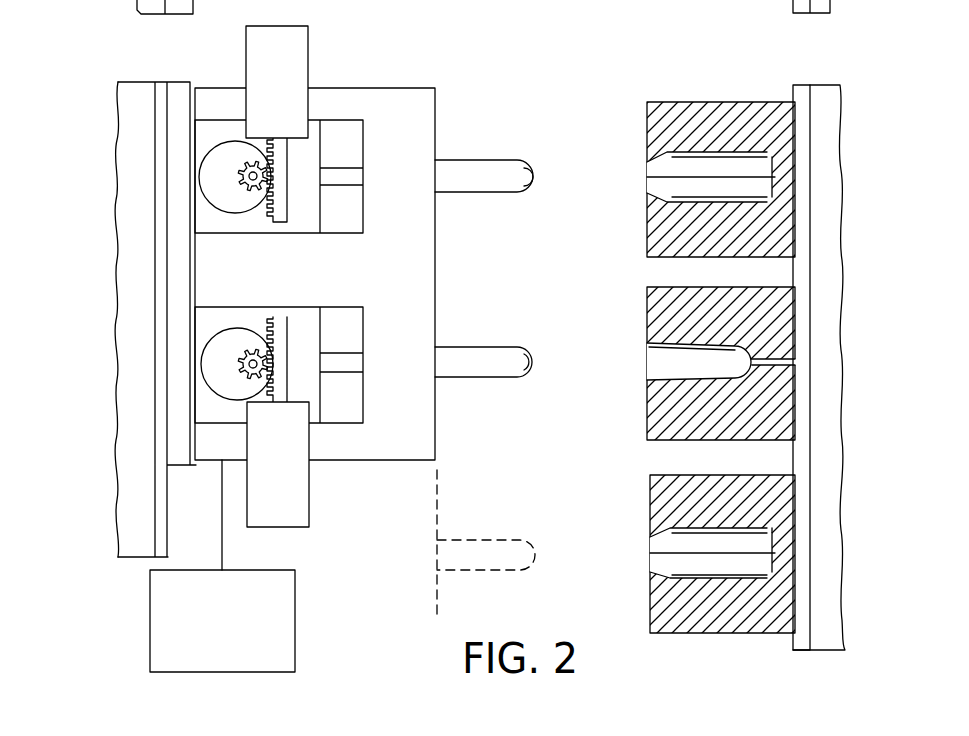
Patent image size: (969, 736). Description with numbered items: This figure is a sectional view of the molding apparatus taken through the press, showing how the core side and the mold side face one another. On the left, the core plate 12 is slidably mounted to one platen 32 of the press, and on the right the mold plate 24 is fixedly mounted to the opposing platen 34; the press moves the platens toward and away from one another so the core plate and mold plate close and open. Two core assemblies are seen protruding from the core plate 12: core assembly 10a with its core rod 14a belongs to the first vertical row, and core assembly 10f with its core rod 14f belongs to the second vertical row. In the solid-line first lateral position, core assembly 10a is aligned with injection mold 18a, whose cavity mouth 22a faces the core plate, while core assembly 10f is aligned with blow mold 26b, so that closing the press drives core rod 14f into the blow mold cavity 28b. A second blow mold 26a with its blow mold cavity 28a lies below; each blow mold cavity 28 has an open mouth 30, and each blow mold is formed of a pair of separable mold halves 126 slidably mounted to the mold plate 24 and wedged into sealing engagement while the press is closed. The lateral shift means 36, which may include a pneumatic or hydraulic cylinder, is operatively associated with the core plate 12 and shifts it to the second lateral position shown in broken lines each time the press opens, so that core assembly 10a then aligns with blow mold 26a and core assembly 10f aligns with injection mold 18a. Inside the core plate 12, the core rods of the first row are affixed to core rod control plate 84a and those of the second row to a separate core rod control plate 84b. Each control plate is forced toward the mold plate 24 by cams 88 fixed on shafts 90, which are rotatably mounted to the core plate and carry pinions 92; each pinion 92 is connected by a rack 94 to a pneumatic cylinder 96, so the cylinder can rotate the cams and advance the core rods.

The core assembly 10a is at (509, 432).
The core assembly 10f is at (507, 156).
The core plate 12 is at (393, 85).
The core rod 14a is at (520, 348).
The core rod 14f is at (520, 160).
The injection mold 18a is at (645, 305).
The cavity mouth 22a is at (657, 370).
The mold plate 24 is at (802, 93).
The blow mold 26a is at (645, 492).
The blow mold 26b is at (645, 118).
The blow mold cavity 28 is at (660, 545).
The blow mold cavity 28a is at (668, 375).
The blow mold cavity 28b is at (737, 162).
The cavity mouth 30 is at (650, 185).
The platen 32 is at (127, 97).
The platen 34 is at (828, 97).
The lateral shift means 36 is at (296, 623).
The core rod control plate 84a is at (305, 313).
The core rod control plate 84b is at (219, 183).
The cam 88 is at (213, 183).
The shaft 90 is at (238, 166).
The pinion 92 is at (243, 158).
The rack 94 is at (283, 318).
The pneumatic cylinder 96 is at (277, 33).
The blow mold half 126 is at (686, 334).